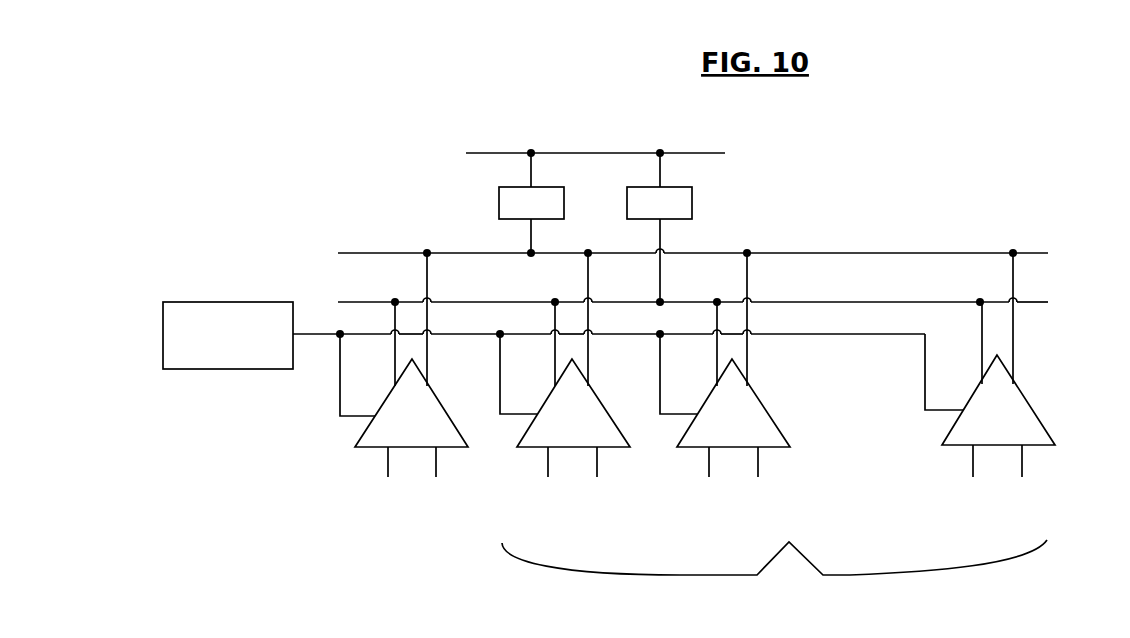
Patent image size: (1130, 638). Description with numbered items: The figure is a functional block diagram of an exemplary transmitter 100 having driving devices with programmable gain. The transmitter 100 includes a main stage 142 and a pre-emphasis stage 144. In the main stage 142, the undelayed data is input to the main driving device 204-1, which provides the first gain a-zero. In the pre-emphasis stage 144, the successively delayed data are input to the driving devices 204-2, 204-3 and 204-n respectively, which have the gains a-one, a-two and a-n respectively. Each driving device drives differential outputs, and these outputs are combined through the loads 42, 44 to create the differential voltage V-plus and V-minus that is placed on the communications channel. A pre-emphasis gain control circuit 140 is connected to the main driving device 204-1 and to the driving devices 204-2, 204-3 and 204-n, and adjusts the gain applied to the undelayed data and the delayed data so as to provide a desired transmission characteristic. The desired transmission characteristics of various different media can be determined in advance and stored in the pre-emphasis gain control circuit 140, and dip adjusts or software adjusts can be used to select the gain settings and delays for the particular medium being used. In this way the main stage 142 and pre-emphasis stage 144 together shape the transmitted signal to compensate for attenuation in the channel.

The transmitter 100 is at (919, 163).
The pre-emphasis gain control circuit 140 is at (226, 301).
The main stage 142 is at (388, 535).
The pre-emphasis stage 144 is at (847, 575).
The load 42 is at (498, 202).
The load 44 is at (692, 202).
The main driving device 204-1 is at (362, 437).
The driving device 204-2 is at (614, 421).
The driving device 204-3 is at (770, 413).
The driving device 204-n is at (1037, 412).